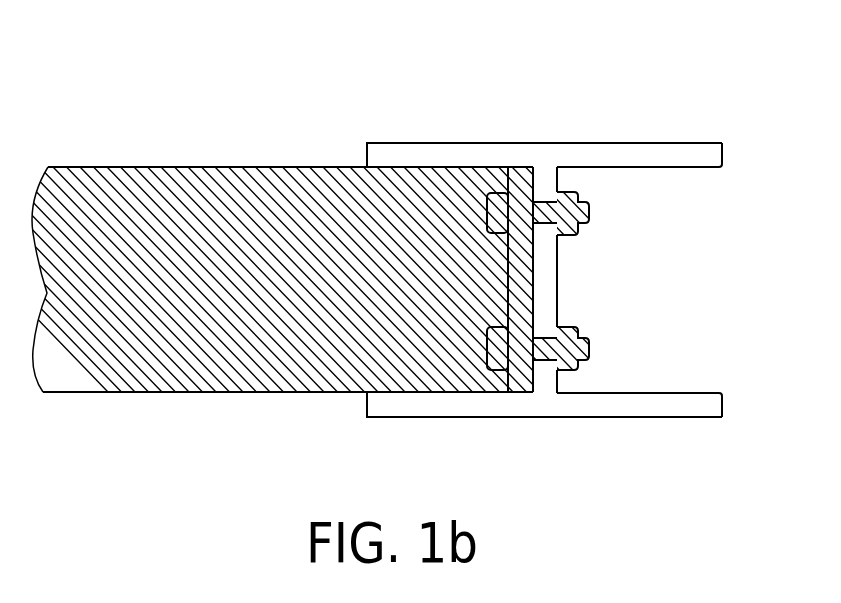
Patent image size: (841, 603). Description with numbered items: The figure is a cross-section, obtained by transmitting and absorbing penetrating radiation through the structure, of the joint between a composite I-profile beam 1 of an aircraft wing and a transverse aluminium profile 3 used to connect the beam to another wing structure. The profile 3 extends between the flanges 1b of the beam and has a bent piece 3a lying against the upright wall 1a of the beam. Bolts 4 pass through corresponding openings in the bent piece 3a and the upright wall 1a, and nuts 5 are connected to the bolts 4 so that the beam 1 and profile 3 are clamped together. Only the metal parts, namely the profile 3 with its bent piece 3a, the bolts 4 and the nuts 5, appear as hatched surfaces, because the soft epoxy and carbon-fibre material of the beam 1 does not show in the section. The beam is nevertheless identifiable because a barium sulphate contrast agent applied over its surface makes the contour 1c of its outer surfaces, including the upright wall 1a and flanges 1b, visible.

The beam 1 is at (575, 255).
The upright wall 1a is at (547, 287).
The flanges 1b is at (682, 152).
The contour 1c is at (410, 152).
The profile 3 is at (282, 245).
The bent piece 3a is at (518, 287).
The bolts 4 is at (487, 212).
The nuts 5 is at (580, 232).